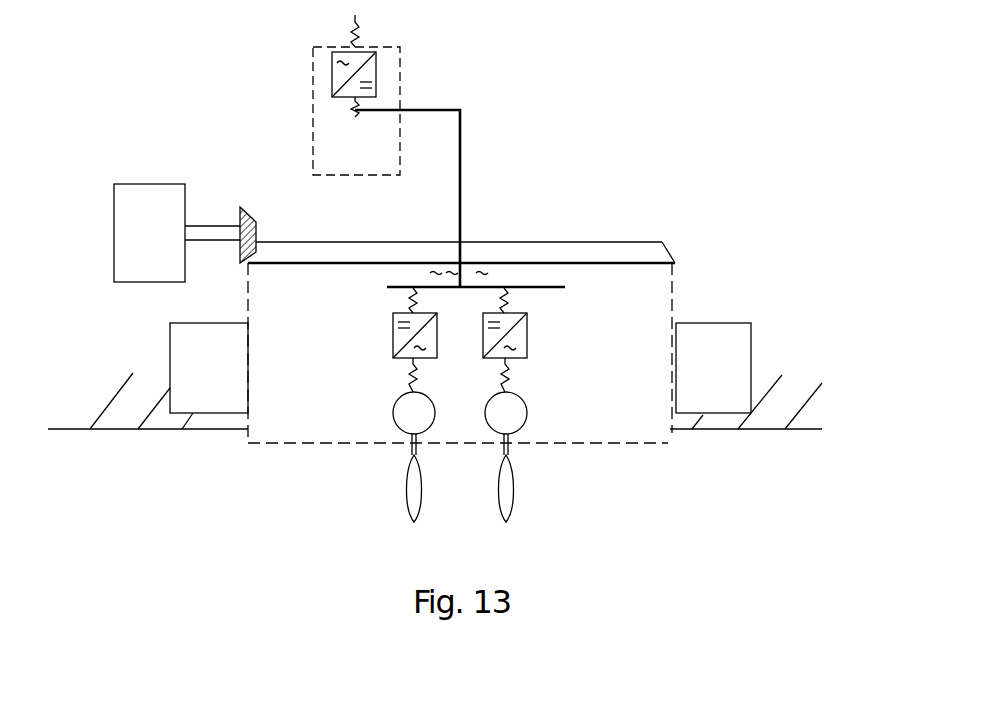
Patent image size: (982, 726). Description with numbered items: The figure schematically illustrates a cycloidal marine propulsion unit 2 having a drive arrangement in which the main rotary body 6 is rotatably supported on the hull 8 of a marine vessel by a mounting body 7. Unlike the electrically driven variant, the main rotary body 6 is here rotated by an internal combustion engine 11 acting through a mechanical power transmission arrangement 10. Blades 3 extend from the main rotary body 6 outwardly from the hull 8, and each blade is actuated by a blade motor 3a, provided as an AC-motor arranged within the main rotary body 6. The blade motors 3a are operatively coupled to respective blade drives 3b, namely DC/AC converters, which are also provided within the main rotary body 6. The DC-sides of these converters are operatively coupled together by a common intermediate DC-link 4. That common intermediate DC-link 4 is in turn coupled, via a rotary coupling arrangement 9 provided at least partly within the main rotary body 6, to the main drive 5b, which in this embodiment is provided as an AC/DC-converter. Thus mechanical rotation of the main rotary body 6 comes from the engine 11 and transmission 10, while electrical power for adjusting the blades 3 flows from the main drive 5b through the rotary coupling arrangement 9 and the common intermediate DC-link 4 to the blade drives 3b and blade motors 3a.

The cycloidal marine propulsion unit 2 is at (661, 156).
The blades 3 is at (405, 500).
The blade motors 3a is at (393, 415).
The blade drives 3b is at (393, 357).
The common intermediate DC-link 4 is at (490, 287).
The main drive 5b is at (313, 75).
The main rotary body 6 is at (672, 300).
The mounting body 7 is at (170, 352).
The hull 8 is at (92, 430).
The rotary coupling arrangement 9 is at (468, 273).
The mechanical power transmission arrangement 10 is at (240, 207).
The internal combustion engine 11 is at (114, 184).